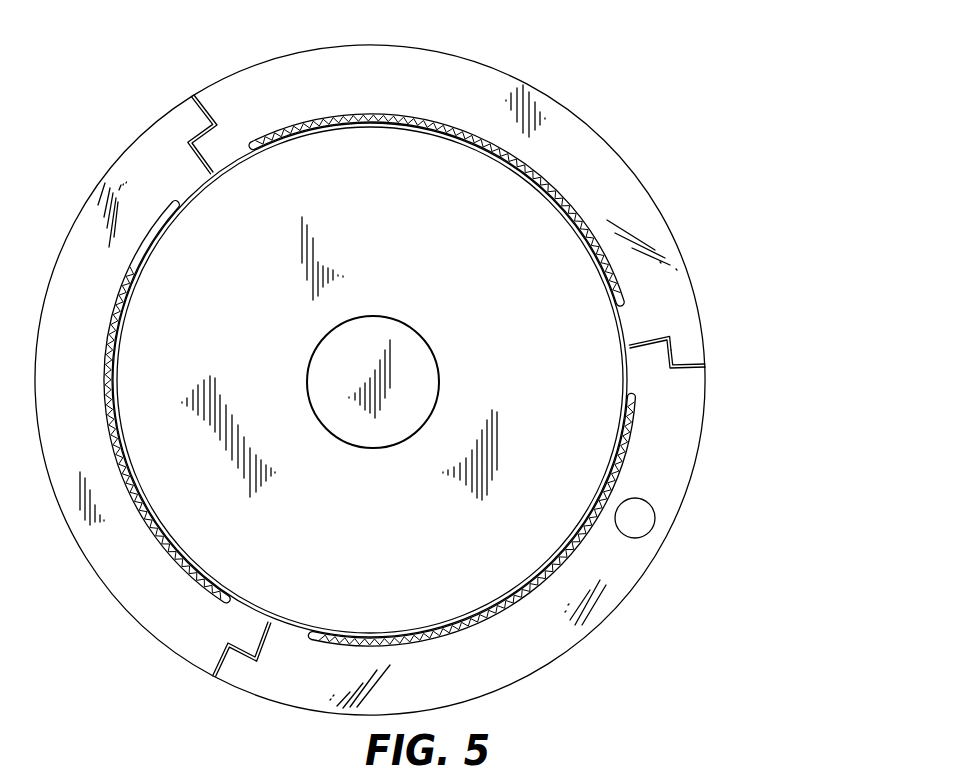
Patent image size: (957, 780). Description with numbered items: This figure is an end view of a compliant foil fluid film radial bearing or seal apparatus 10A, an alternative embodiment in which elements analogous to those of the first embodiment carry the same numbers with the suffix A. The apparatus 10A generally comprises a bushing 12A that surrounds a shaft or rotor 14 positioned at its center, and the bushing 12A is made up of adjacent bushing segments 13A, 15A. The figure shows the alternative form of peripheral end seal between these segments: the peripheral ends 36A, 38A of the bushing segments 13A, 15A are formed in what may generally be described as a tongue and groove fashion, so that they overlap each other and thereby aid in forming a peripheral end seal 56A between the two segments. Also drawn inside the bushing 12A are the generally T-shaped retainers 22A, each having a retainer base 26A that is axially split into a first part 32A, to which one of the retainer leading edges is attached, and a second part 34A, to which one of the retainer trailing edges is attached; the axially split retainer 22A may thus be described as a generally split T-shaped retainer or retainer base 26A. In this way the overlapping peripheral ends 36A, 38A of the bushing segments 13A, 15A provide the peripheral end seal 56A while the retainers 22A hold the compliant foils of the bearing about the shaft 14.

The compliant foil fluid film radial bearing and/or seal apparatus 10A is at (146, 68).
The bushing 12A is at (416, 380).
The bushing segment 13A is at (512, 75).
The shaft or rotor 14 is at (462, 318).
The bushing segment 15A is at (688, 502).
The generally T-shaped retainer 22A is at (476, 380).
The retainer base 26A is at (476, 380).
The first part of retainer base 32A is at (645, 388).
The second part of retainer base 34A is at (632, 298).
The peripheral end 36A is at (641, 318).
The peripheral end 38A is at (686, 372).
The peripheral end seal 56A is at (708, 360).